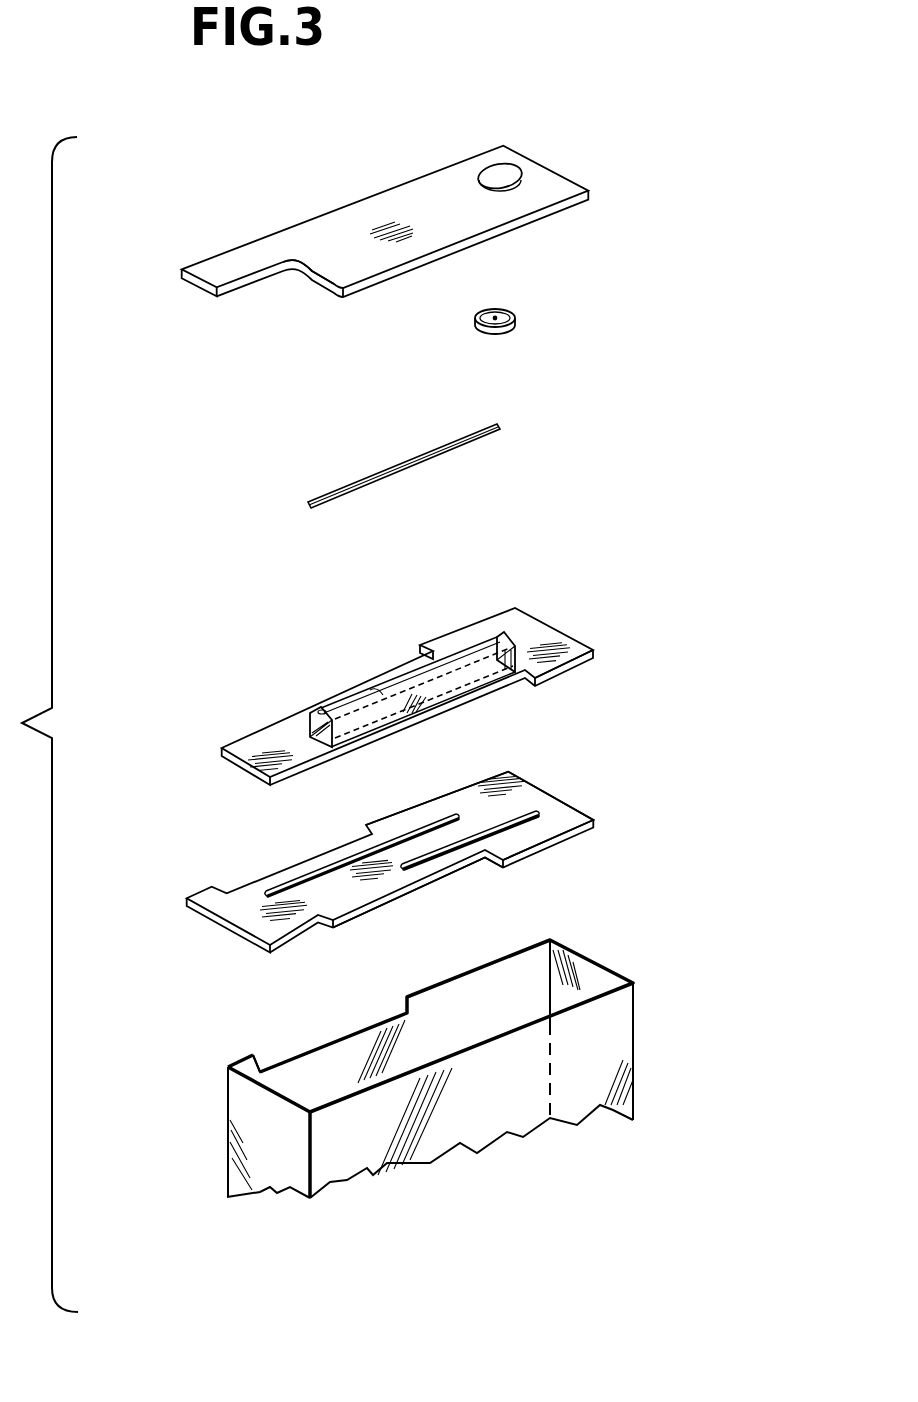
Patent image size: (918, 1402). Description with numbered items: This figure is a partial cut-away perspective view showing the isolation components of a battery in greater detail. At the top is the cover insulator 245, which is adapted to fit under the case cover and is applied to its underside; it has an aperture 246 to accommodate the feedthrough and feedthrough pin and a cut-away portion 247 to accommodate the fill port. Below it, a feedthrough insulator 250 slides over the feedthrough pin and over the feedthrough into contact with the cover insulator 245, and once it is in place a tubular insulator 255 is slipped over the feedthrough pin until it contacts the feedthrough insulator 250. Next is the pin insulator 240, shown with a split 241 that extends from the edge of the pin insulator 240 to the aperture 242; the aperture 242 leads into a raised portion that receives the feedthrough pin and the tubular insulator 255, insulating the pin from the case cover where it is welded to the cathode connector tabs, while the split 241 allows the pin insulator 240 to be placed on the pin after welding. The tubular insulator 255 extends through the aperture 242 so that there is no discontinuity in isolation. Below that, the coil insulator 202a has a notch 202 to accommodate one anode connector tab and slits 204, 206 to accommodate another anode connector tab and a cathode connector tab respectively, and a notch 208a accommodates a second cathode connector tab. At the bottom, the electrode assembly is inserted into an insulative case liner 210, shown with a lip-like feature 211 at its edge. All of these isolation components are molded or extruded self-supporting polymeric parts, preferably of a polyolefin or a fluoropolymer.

The cover insulator 245 is at (570, 178).
The aperture 246 is at (515, 167).
The cut-away portion 247 is at (322, 289).
The feedthrough insulator 250 is at (518, 313).
The tubular insulator 255 is at (460, 434).
The pin insulator 240 is at (567, 632).
The split 241 is at (565, 667).
The aperture 242 is at (510, 643).
The notch 202 is at (265, 877).
The coil insulator 202a is at (568, 803).
The slit 204 is at (265, 892).
The slit 206 is at (527, 828).
The notch 208a is at (447, 875).
The case liner 210 is at (636, 1030).
The lip 211 is at (310, 1052).